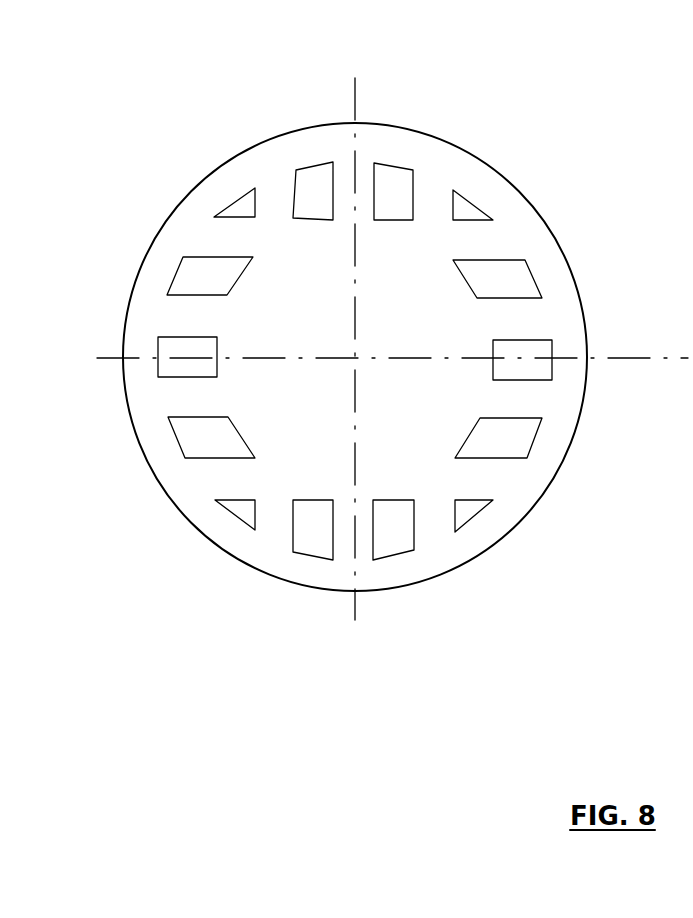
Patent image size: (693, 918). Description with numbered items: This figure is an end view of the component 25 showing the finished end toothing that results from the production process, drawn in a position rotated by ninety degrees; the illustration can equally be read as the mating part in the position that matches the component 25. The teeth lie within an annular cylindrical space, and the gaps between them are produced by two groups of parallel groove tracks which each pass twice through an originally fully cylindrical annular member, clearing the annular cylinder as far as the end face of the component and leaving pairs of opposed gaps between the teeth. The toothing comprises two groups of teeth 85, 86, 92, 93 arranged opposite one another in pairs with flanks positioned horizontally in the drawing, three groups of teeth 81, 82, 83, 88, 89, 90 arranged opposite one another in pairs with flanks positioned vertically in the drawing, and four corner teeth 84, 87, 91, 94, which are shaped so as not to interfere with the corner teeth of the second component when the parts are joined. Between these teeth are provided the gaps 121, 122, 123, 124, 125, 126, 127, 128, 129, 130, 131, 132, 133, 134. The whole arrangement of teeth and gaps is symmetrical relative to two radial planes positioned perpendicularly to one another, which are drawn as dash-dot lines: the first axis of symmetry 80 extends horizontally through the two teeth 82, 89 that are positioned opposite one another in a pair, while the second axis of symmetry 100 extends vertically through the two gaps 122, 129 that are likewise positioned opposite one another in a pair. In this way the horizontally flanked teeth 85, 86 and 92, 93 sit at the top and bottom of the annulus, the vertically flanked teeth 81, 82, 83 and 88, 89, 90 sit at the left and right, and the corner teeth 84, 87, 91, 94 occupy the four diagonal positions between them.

The component 25 is at (175, 188).
The first axis of symmetry 80 is at (293, 363).
The second axis of symmetry 100 is at (353, 262).
The tooth 81 is at (523, 280).
The tooth 82 is at (537, 362).
The tooth 83 is at (523, 437).
The corner tooth 84 is at (467, 525).
The tooth 85 is at (392, 547).
The tooth 86 is at (313, 545).
The corner tooth 87 is at (241, 512).
The tooth 88 is at (193, 442).
The tooth 89 is at (183, 358).
The tooth 90 is at (197, 283).
The corner tooth 91 is at (226, 205).
The tooth 92 is at (312, 187).
The tooth 93 is at (391, 180).
The corner tooth 94 is at (467, 205).
The gap 121 is at (435, 537).
The gap 122 is at (353, 555).
The gap 123 is at (272, 530).
The gap 124 is at (220, 482).
The gap 125 is at (177, 403).
The gap 126 is at (195, 322).
The gap 127 is at (220, 237).
The gap 128 is at (276, 175).
The gap 129 is at (357, 168).
The gap 130 is at (440, 180).
The gap 131 is at (493, 233).
The gap 132 is at (527, 322).
The gap 133 is at (527, 400).
The gap 134 is at (498, 473).